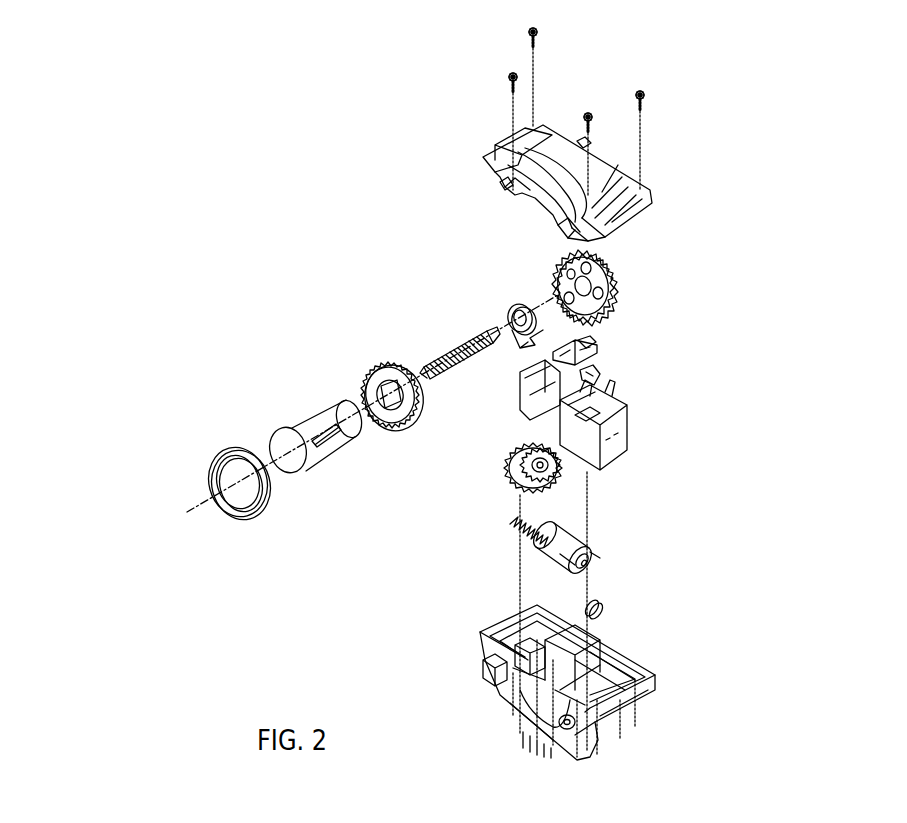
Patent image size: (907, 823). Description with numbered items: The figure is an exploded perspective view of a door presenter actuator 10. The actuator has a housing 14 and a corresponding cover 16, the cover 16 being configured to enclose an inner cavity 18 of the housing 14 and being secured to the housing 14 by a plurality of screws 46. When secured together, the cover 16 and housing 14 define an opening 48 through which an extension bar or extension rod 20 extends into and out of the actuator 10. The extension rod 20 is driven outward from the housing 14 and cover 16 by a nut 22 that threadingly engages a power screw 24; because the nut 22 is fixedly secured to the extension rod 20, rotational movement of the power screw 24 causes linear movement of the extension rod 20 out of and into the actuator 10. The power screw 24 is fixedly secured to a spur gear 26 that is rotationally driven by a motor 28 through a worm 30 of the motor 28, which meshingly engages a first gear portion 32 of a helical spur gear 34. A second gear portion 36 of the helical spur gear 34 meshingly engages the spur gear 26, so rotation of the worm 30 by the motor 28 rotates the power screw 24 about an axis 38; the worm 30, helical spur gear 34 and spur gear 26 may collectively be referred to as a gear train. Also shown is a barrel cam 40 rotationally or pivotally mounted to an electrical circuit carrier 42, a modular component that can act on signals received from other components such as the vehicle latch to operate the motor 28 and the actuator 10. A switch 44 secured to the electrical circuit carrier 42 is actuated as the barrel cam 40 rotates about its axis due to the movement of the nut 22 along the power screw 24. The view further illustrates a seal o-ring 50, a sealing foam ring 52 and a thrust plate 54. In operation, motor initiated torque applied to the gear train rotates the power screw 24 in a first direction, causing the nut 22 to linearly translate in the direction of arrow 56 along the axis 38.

The door presenter actuator 10 is at (730, 169).
The housing 14 is at (510, 708).
The cover 16 is at (650, 195).
The inner cavity 18 is at (604, 674).
The extension bar or extension rod 20 is at (307, 420).
The nut 22 is at (508, 299).
The power screw 24 is at (430, 348).
The spur gear 26 is at (613, 288).
The motor 28 is at (575, 537).
The worm 30 is at (513, 532).
The first gear portion 32 is at (512, 450).
The helical spur gear 34 is at (496, 468).
The second gear portion 36 is at (560, 470).
The axis 38 is at (205, 508).
The barrel cam 40 is at (590, 347).
The electrical circuit carrier (ECC) 42 is at (630, 425).
The switch 44 is at (592, 374).
The screws 46 is at (583, 113).
The opening 48 is at (503, 190).
The seal o-ring 50 is at (378, 365).
The sealing foam ring 52 is at (215, 460).
The thrust plate 54 is at (607, 598).
The arrow 56 is at (437, 220).